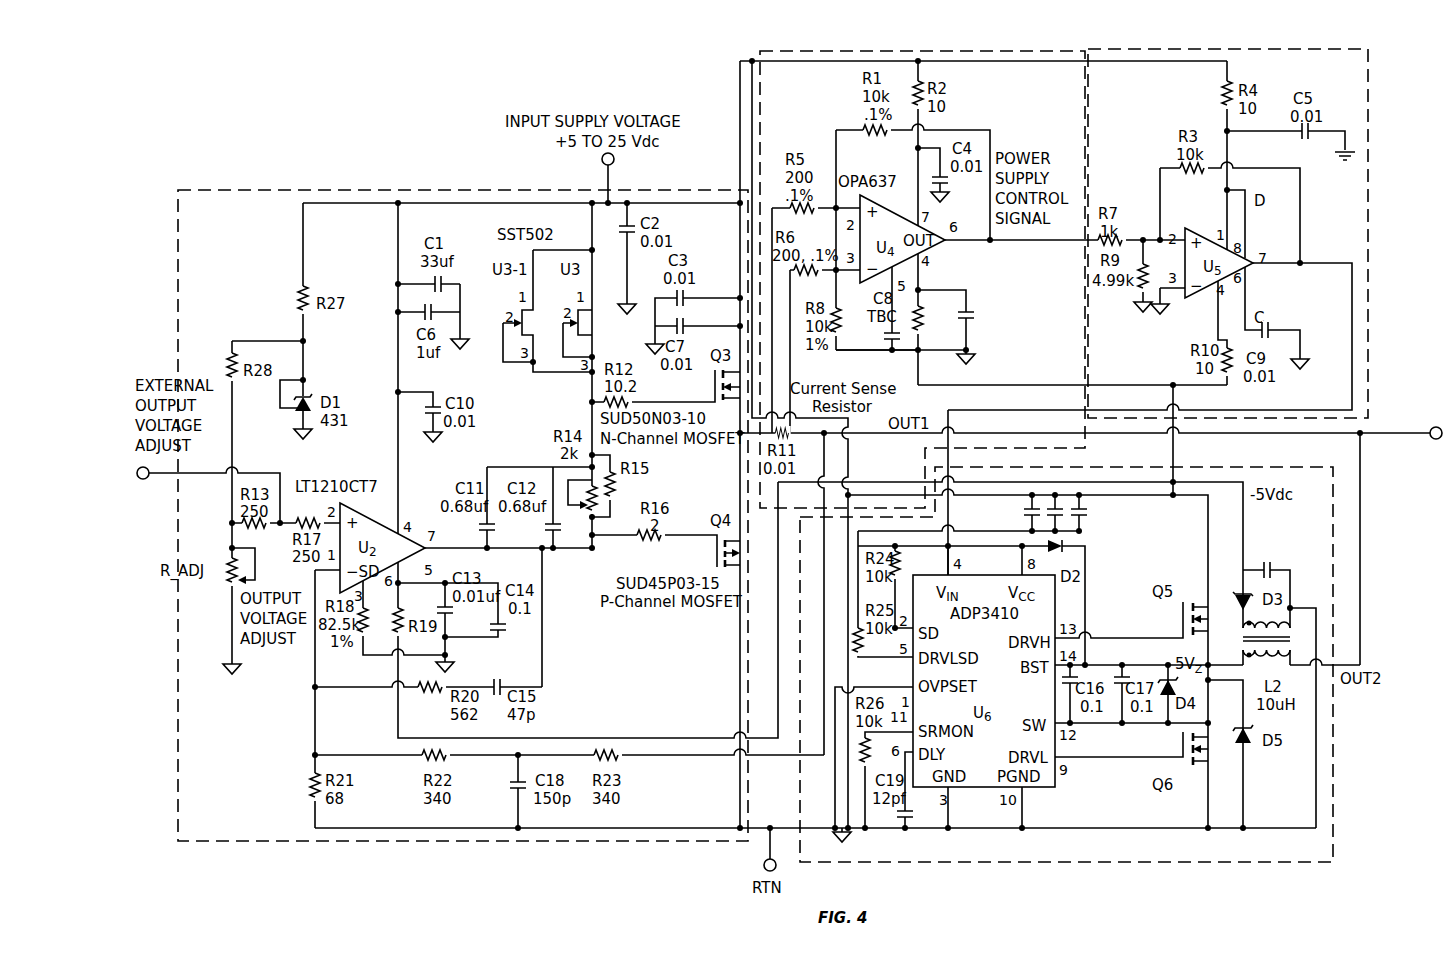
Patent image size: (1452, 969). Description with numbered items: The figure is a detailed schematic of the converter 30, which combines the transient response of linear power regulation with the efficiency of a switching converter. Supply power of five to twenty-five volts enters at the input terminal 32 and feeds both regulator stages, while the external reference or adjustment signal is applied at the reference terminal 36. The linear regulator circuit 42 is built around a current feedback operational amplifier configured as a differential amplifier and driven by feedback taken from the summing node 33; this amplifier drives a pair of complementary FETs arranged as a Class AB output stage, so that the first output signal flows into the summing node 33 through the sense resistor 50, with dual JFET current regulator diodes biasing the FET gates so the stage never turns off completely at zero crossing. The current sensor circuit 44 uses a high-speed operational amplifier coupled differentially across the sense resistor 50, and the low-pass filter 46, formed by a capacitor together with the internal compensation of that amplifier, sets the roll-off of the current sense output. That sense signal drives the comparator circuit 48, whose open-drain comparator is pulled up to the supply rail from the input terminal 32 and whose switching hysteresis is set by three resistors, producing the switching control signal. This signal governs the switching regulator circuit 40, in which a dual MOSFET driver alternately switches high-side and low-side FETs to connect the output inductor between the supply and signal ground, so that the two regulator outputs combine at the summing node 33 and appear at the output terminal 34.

The converter 30 is at (381, 146).
The input terminal 32 is at (603, 162).
The summing node 33 is at (1244, 436).
The output terminal 34 is at (1434, 441).
The reference terminal 36 is at (147, 479).
The switching regulator circuit 40 is at (1334, 846).
The linear regulator circuit 42 is at (296, 845).
The current sensor circuit 44 is at (757, 95).
The low-pass filter 46 is at (886, 353).
The comparator circuit 48 is at (1368, 373).
The sense resistor 50 is at (788, 444).